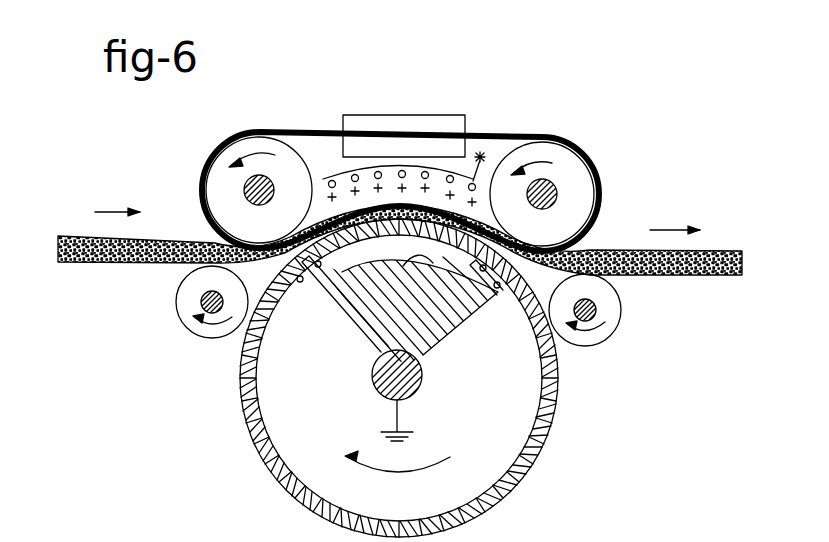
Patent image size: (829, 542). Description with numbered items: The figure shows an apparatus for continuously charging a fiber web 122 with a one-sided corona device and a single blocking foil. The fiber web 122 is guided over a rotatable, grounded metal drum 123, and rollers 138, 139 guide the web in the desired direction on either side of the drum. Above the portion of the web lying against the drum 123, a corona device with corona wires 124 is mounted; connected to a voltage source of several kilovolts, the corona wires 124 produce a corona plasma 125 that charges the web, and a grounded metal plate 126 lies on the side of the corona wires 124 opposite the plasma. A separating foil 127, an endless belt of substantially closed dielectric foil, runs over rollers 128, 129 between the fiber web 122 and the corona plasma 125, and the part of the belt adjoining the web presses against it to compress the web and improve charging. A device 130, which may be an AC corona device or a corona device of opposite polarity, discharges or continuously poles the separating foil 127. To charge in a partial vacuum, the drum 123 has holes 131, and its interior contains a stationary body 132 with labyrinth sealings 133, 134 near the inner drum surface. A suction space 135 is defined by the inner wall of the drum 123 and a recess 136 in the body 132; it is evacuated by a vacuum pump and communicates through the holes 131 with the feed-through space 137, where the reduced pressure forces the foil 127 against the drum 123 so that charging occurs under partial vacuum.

The fiber web 122 is at (87, 262).
The metal drum 123 is at (242, 403).
The corona wires 124 is at (492, 178).
The corona plasma 125 is at (527, 185).
The grounded metal plate 126 is at (362, 195).
The separating foil 127 is at (338, 177).
The roller 128 is at (217, 175).
The roller 129 is at (578, 180).
The device 130 is at (420, 140).
The holes 131 is at (267, 468).
The stationary body 132 is at (467, 263).
The labyrinth sealing 133 is at (295, 328).
The labyrinth sealing 134 is at (547, 350).
The suction space 135 is at (485, 276).
The recess 136 is at (443, 257).
The space for feeding through fiber web 137 is at (368, 177).
The roller 138 is at (185, 298).
The roller 139 is at (620, 312).